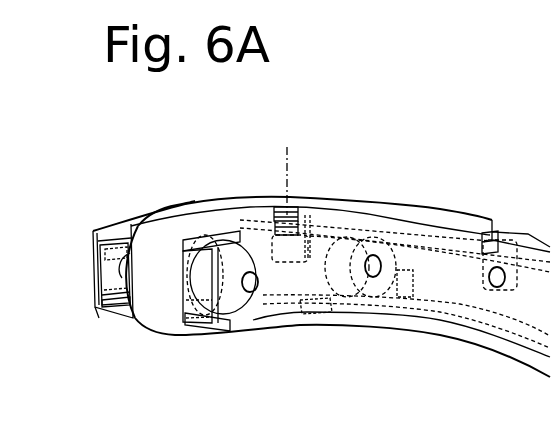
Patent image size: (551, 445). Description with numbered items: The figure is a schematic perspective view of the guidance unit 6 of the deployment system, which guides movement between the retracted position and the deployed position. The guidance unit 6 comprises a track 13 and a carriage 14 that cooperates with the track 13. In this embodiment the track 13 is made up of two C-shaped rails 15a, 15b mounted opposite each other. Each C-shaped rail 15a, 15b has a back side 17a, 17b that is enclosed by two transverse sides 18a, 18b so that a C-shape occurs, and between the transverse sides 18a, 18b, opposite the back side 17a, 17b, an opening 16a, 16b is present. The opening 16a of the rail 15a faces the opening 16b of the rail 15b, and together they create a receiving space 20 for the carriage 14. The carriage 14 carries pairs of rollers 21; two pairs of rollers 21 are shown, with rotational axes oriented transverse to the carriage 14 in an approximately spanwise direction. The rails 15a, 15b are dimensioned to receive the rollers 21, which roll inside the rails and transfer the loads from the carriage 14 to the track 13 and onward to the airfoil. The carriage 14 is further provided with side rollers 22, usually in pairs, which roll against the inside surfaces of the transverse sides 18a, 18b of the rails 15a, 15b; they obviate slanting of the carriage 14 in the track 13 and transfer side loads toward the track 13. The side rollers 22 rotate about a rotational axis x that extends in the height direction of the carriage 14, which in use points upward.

The guidance unit 6 is at (368, 188).
The track 13 is at (100, 238).
The carriage 14 is at (177, 217).
The C-shaped rail 15a is at (213, 320).
The C-shaped rail 15b is at (113, 293).
The opening 16a is at (199, 294).
The opening 16b is at (130, 293).
The back side 17a is at (297, 300).
The back side 17b is at (98, 263).
The transverse side 18a is at (240, 237).
The transverse side 18b is at (113, 240).
The receiving space 20 is at (168, 320).
The rollers 21 is at (233, 262).
The side rollers 22 is at (320, 220).
The rotational axis x is at (289, 170).